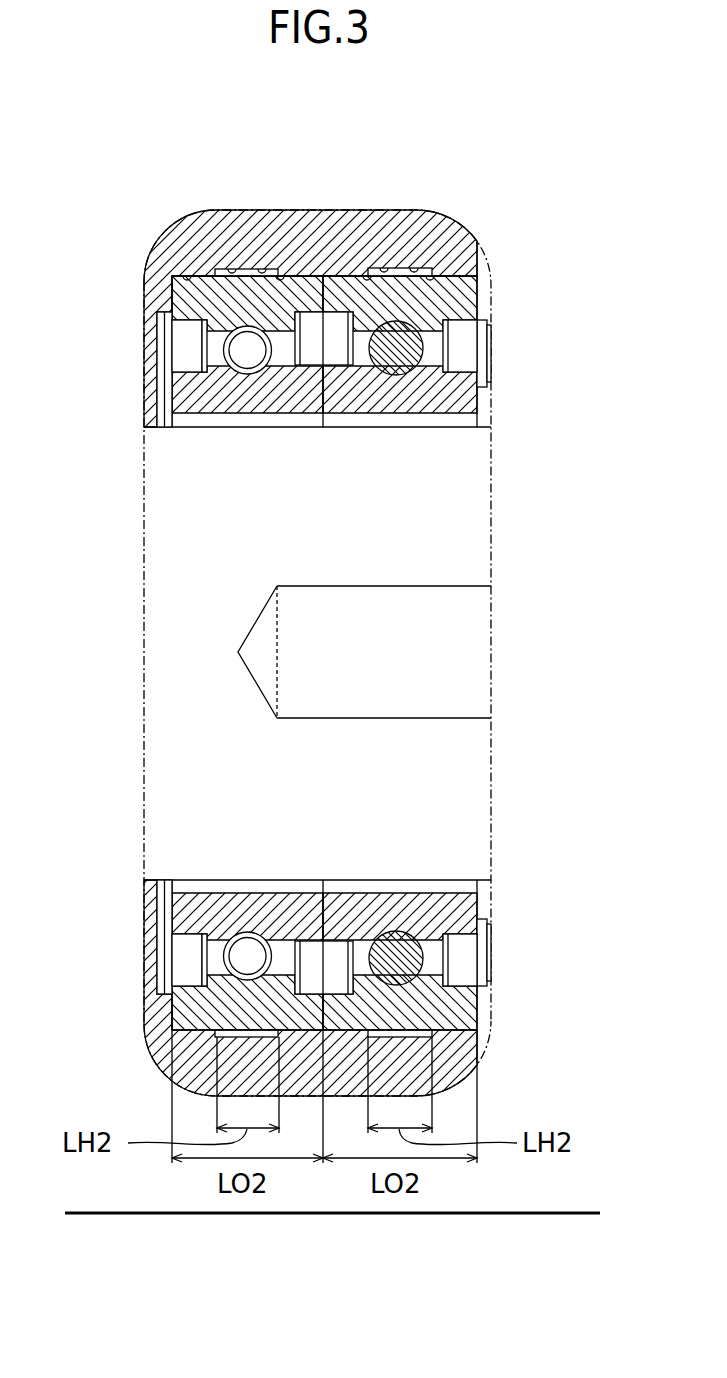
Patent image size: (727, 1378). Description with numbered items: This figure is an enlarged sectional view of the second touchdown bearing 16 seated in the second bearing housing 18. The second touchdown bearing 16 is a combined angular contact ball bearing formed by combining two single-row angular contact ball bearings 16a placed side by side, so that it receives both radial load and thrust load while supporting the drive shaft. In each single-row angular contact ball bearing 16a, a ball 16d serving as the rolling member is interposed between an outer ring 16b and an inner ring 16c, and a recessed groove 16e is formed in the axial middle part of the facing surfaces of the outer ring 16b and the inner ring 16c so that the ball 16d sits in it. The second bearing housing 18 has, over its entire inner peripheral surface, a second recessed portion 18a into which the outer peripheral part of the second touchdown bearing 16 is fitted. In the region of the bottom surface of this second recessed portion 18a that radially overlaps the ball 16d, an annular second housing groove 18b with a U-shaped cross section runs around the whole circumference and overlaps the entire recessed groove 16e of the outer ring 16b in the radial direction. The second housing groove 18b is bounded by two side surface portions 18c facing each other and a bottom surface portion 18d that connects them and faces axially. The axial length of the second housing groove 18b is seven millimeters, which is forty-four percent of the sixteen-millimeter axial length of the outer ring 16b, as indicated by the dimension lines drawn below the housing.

The second bearing housing 18 is at (437, 250).
The second recessed portion 18a is at (176, 275).
The second housing groove 18b is at (233, 268).
The side surface portions 18c is at (211, 271).
The bottom surface portion 18d is at (261, 268).
The second touchdown bearing 16 is at (478, 286).
The single-row angular contact ball bearings 16a is at (172, 416).
The outer ring 16b is at (164, 310).
The inner ring 16c is at (170, 378).
The ball 16d is at (205, 345).
The recessed groove 16e is at (226, 963).